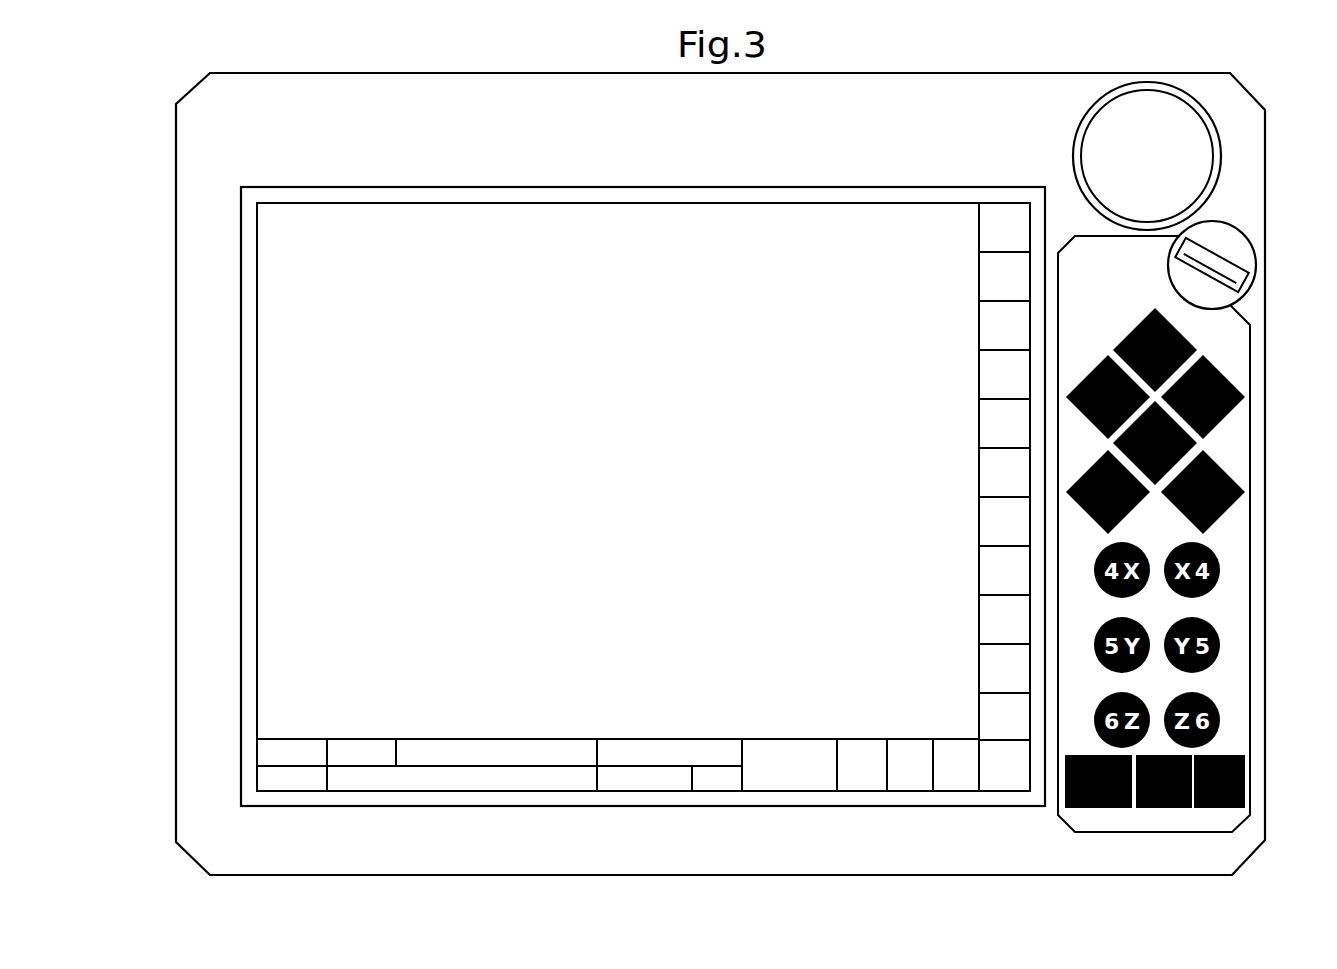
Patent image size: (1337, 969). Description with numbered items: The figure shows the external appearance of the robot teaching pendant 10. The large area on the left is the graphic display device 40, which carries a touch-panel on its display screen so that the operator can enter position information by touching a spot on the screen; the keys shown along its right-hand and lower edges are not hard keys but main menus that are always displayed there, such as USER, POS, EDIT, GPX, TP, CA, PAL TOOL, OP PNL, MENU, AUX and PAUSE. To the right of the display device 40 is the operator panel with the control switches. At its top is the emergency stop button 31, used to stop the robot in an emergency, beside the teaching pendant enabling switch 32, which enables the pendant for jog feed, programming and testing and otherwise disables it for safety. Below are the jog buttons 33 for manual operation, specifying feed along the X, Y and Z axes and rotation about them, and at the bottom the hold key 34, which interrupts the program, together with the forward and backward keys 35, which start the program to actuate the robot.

The robot teaching pendant 10 is at (177, 580).
The graphic display device 40 is at (295, 350).
The emergency stop button 31 is at (1177, 165).
The teaching pendant enabling switch 32 is at (1230, 245).
The jog buttons 33 is at (1212, 445).
The hold key 34 is at (1100, 808).
The forward and backward keys 35 is at (1187, 808).